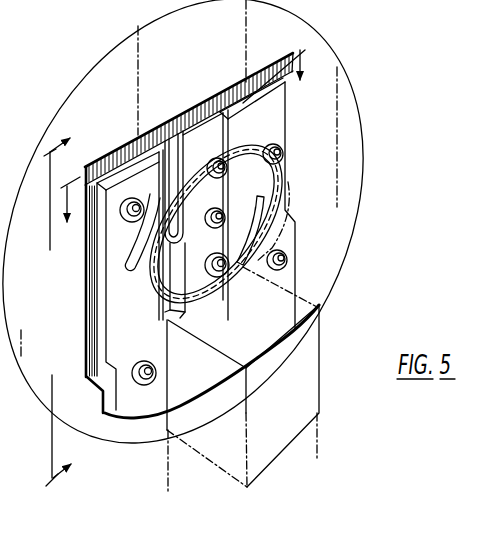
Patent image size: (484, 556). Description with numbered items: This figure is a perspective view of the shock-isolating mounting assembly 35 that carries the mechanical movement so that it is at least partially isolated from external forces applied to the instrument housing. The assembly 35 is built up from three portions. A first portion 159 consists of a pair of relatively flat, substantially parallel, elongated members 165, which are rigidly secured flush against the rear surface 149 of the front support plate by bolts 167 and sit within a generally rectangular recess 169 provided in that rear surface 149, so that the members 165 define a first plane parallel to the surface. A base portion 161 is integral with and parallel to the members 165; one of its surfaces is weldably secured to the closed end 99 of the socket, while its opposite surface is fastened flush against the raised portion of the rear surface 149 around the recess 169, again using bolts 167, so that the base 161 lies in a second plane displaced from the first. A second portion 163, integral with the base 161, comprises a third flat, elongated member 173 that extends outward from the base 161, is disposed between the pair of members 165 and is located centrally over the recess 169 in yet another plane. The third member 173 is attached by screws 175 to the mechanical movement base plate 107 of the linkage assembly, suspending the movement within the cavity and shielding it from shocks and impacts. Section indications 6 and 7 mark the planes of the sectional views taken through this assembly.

The shock-isolating mounting assembly 35 is at (310, 229).
The closed end of the socket 99 is at (308, 393).
The mechanical movement base plate 107 is at (293, 196).
The rear surface of the front support plate 149 is at (82, 103).
The first portion 159 is at (124, 263).
The base portion 161 is at (147, 405).
The second portion 163 is at (208, 100).
The elongated members 165 is at (140, 167).
The bolts 167 is at (280, 153).
The rectangular recess 169 is at (172, 135).
The third elongated member 173 is at (216, 125).
The screws 175 is at (244, 148).
The section line 6- 6 is at (66, 303).
The section line 7- 7 is at (184, 146).